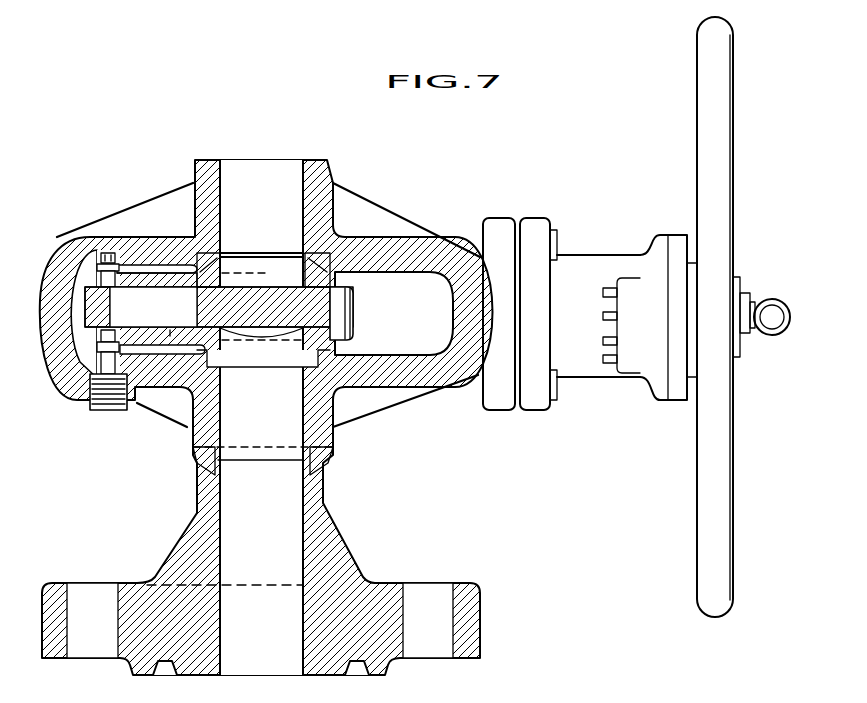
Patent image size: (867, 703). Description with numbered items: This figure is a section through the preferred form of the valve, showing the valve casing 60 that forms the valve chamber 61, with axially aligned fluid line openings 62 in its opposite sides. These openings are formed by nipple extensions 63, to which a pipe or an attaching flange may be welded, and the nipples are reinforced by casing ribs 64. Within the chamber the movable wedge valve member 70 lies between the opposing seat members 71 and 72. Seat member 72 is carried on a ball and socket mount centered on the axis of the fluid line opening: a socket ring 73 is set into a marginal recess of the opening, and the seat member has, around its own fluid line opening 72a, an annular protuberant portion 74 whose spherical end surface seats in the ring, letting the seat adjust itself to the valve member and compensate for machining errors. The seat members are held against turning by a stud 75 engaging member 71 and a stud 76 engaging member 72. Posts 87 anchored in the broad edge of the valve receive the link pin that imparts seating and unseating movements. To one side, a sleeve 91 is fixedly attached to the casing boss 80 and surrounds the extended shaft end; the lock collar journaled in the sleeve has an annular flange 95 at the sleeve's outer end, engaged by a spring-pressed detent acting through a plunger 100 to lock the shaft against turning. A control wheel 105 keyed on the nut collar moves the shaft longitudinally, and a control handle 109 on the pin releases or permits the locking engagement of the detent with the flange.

The valve casing 60 is at (457, 262).
The valve chamber 61 is at (412, 330).
The fluid line openings 62 is at (261, 417).
The nipple extensions 63 is at (325, 190).
The casing ribs 64 is at (390, 224).
The movable wedge valve member 70 is at (213, 307).
The seat member 71 is at (131, 330).
The seat member 72 is at (155, 282).
The fluid line opening of seat member 72a is at (258, 268).
The socket ring 73 is at (318, 250).
The annular protuberant portion 74 is at (307, 280).
The stud 75 is at (95, 368).
The stud 76 is at (125, 268).
The casing boss 80 is at (490, 380).
The posts 87 is at (338, 313).
The sleeve 91 is at (575, 265).
The annular flange 95 is at (680, 393).
The plunger 100 is at (603, 315).
The control wheel 105 is at (715, 139).
The control handle 109 is at (773, 312).